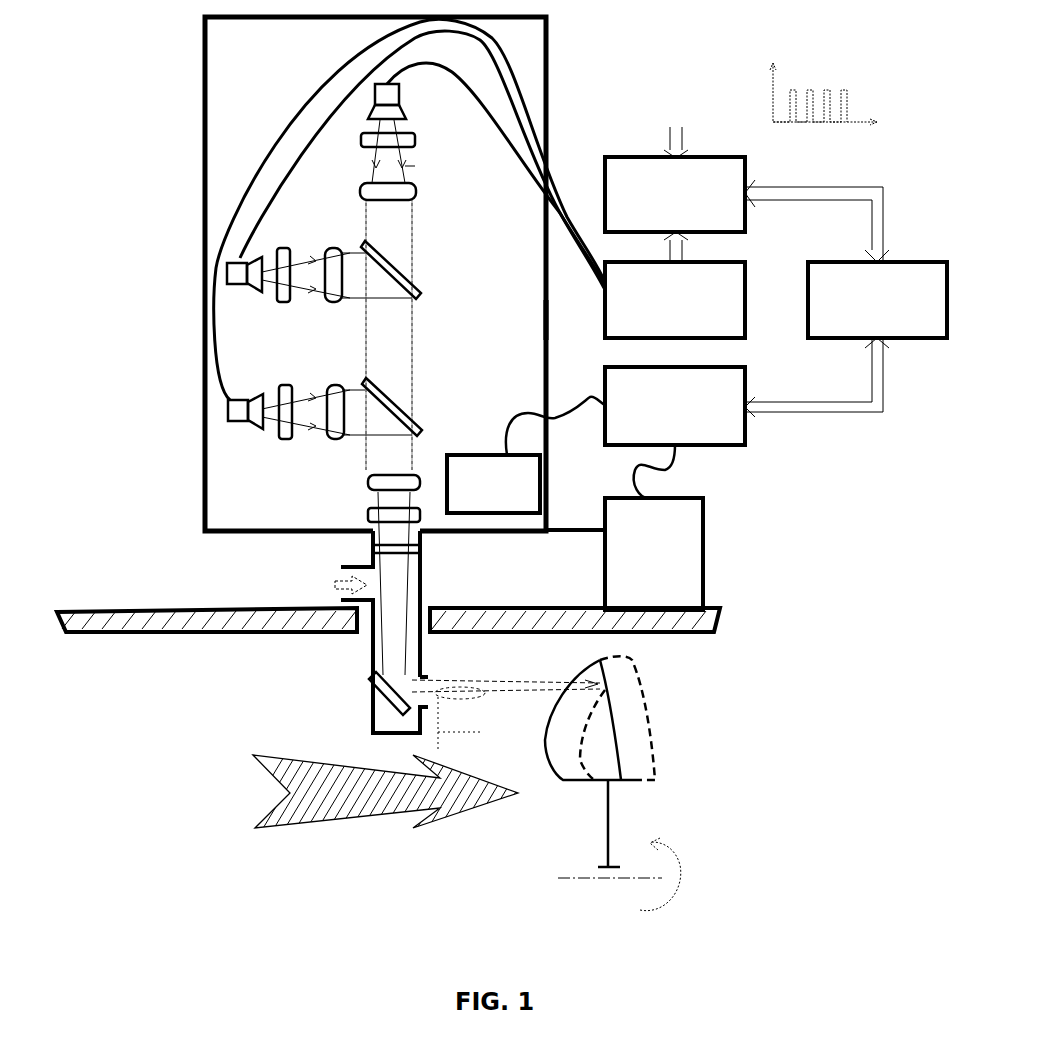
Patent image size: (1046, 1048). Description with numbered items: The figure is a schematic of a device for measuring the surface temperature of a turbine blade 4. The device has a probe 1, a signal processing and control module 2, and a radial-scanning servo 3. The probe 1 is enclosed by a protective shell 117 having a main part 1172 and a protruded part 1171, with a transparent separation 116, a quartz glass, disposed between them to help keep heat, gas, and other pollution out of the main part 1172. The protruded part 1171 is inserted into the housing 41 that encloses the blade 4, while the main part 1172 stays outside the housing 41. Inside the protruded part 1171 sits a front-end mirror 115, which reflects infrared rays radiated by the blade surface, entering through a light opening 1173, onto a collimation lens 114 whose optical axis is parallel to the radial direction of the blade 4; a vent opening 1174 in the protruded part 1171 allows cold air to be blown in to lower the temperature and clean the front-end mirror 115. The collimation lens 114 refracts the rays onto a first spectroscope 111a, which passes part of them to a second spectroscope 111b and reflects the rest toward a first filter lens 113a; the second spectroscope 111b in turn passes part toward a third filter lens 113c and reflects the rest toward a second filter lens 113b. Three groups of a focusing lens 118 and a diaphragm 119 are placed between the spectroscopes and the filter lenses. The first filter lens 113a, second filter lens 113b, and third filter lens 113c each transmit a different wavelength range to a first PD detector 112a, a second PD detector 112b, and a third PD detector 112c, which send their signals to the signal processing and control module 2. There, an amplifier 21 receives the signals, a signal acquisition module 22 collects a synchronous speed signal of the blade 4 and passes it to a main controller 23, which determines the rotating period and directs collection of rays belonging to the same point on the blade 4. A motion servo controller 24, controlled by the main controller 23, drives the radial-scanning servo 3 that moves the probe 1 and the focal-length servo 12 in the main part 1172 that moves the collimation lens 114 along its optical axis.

The probe 1 is at (428, 584).
The signal processing and control module 2 is at (776, 240).
The radial-scanning servo 3 is at (654, 554).
The turbine blade 4 is at (615, 783).
The focal-length servo 12 is at (493, 484).
The amplifier 21 is at (675, 300).
The signal acquisition module 22 is at (675, 194).
The main controller 23 is at (877, 300).
The motion servo controller 24 is at (675, 406).
The housing 41 is at (214, 630).
The first spectroscope 111a is at (367, 380).
The second spectroscope 111b is at (366, 243).
The first PD detector 112a is at (228, 412).
The second PD detector 112b is at (227, 277).
The third PD detector 112c is at (377, 100).
The first filter lens 113a is at (280, 387).
The second filter lens 113b is at (278, 250).
The third filter lens 113c is at (360, 138).
The collimation lens 114 is at (372, 512).
The front-end mirror 115 is at (375, 673).
The transparent separation 116 is at (373, 548).
The protective shell 117 is at (556, 57).
The focusing lens 118 is at (360, 192).
The diaphragm 119 is at (360, 167).
The protruded part 1171 is at (368, 702).
The main part 1172 is at (546, 318).
The light opening 1173 is at (427, 689).
The vent opening 1174 is at (318, 590).